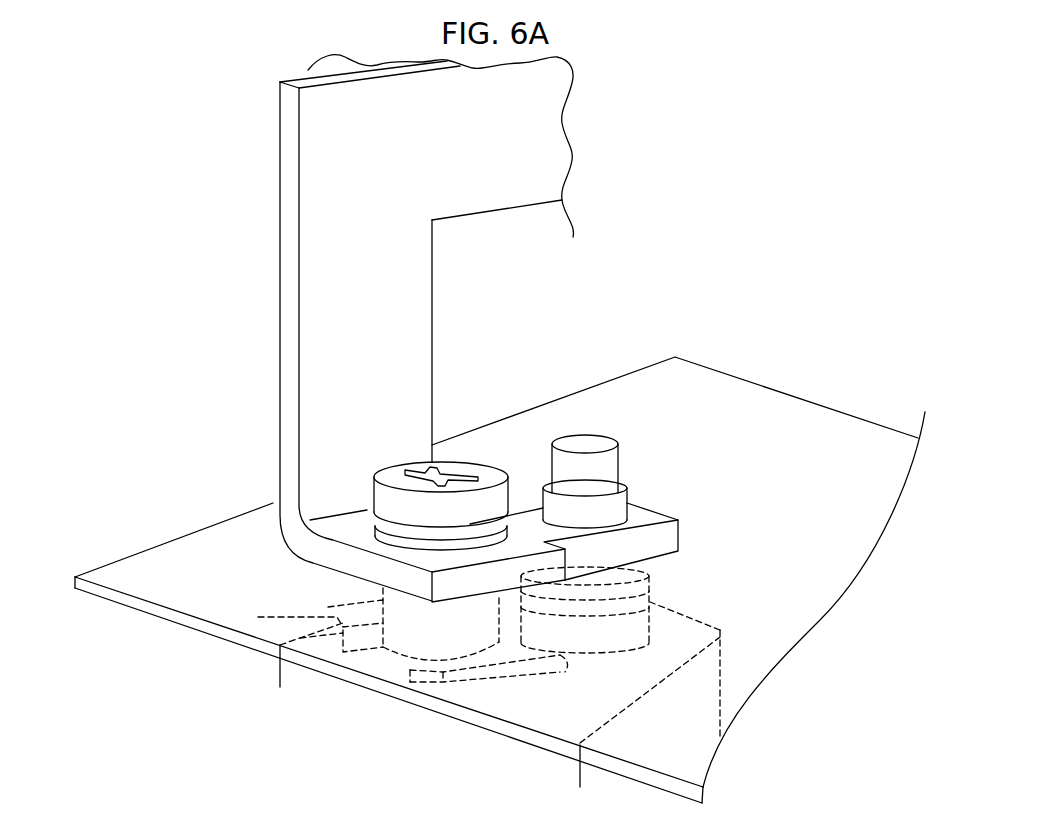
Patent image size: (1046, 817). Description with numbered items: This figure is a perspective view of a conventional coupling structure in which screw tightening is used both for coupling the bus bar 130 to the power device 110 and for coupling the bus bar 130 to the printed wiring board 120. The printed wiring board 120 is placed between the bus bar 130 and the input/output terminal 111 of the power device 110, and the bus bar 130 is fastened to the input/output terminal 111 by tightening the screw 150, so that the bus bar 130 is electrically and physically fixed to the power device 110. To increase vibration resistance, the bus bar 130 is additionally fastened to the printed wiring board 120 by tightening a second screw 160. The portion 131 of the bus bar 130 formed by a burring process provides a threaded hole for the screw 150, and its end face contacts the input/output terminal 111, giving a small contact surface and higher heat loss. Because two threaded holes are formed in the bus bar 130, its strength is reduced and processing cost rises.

The power device 110 is at (724, 630).
The input/output terminal 111 is at (258, 617).
The printed wiring board 120 is at (648, 375).
The bus bar 130 is at (423, 333).
The portion of the bus bar formed by the burring process 131 is at (338, 607).
The screw 150 is at (505, 497).
The screw 160 is at (652, 620).